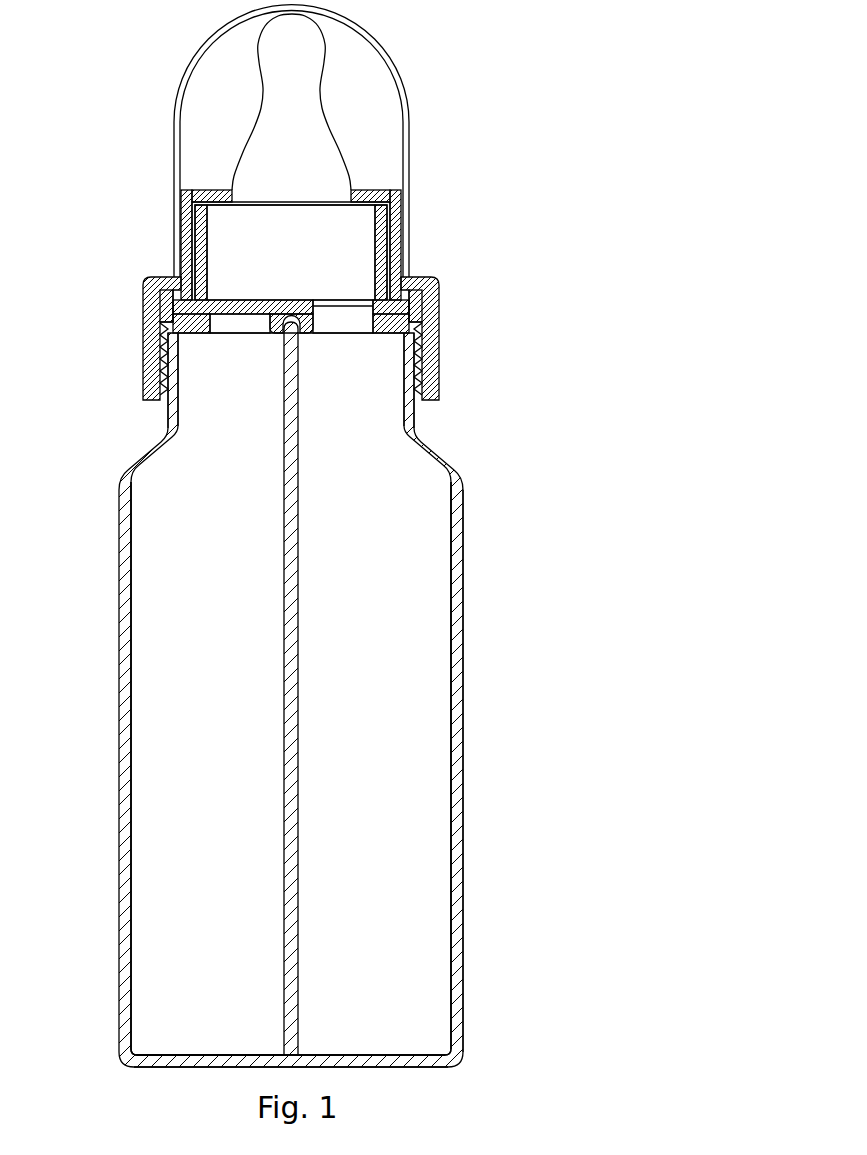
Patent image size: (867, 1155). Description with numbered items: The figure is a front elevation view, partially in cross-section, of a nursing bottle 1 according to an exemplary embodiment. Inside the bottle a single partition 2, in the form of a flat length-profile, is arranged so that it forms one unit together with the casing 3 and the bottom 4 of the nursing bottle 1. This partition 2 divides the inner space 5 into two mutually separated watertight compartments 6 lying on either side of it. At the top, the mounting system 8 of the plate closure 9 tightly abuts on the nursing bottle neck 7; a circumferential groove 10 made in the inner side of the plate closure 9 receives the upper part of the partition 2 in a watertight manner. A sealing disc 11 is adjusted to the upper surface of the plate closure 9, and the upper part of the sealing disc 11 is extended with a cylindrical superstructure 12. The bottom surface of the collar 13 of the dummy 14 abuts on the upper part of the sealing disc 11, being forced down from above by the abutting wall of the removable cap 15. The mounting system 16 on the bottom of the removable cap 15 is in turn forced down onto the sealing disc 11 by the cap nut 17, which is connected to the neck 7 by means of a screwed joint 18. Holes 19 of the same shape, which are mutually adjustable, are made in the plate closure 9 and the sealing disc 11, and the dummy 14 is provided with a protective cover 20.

The nursing bottle 1 is at (462, 590).
The partition 2 is at (297, 743).
The casing 3 is at (462, 667).
The bottom 4 is at (323, 1053).
The inner space 5 is at (182, 667).
The compartments 6 is at (170, 793).
The nursing bottle neck 7 is at (180, 337).
The mounting system 8 is at (150, 355).
The plate closure 9 is at (197, 333).
The circumferential groove 10 is at (300, 342).
The sealing disc 11 is at (197, 263).
The cylindrical superstructure 12 is at (375, 235).
The collar 13 is at (213, 190).
The dummy 14 is at (247, 100).
The removable cap 15 is at (385, 187).
The mounting system 16 is at (437, 310).
The cap nut 17 is at (432, 280).
The screwed joint 18 is at (437, 388).
The holes 19 is at (228, 323).
The protective cover 20 is at (410, 123).